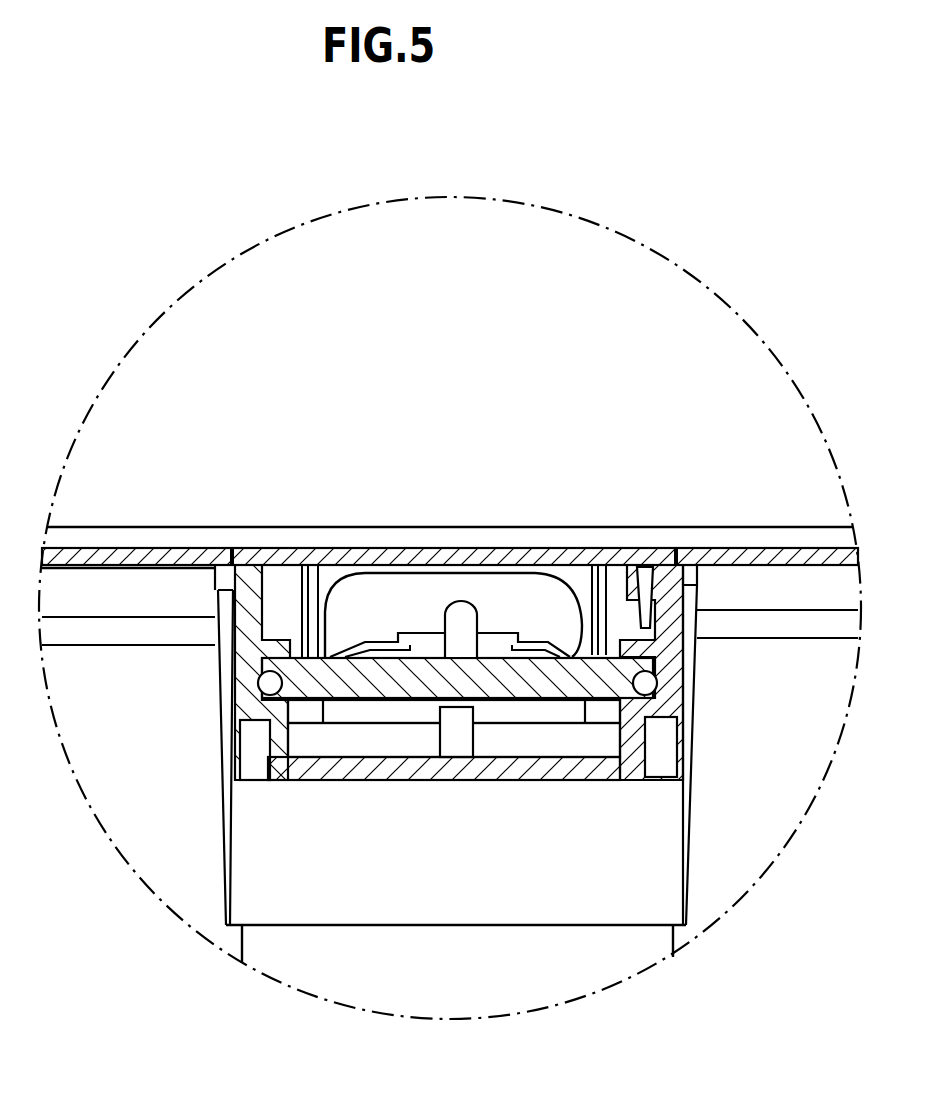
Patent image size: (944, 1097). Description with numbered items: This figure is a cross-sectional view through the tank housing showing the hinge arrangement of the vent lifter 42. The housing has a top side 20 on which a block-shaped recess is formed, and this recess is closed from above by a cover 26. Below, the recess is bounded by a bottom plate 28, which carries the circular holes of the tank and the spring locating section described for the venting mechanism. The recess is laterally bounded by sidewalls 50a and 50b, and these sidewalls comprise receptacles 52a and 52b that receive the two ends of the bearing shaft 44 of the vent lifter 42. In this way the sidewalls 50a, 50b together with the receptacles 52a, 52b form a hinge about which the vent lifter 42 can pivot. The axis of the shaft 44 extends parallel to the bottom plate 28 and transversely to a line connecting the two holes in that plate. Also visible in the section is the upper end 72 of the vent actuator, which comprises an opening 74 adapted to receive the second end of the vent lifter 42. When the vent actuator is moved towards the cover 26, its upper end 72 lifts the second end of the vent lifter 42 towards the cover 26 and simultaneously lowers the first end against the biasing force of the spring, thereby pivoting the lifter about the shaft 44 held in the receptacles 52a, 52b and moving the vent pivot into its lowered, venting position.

The top side 20 is at (750, 556).
The cover 26 is at (366, 556).
The bottom plate 28 is at (482, 782).
The vent lifter 42 is at (556, 657).
The bearing shaft 44 is at (372, 682).
The sidewall 50a is at (235, 655).
The sidewall 50b is at (690, 645).
The receptacle 52a is at (243, 712).
The receptacle 52b is at (672, 706).
The upper end 72 is at (407, 598).
The opening 74 is at (478, 612).